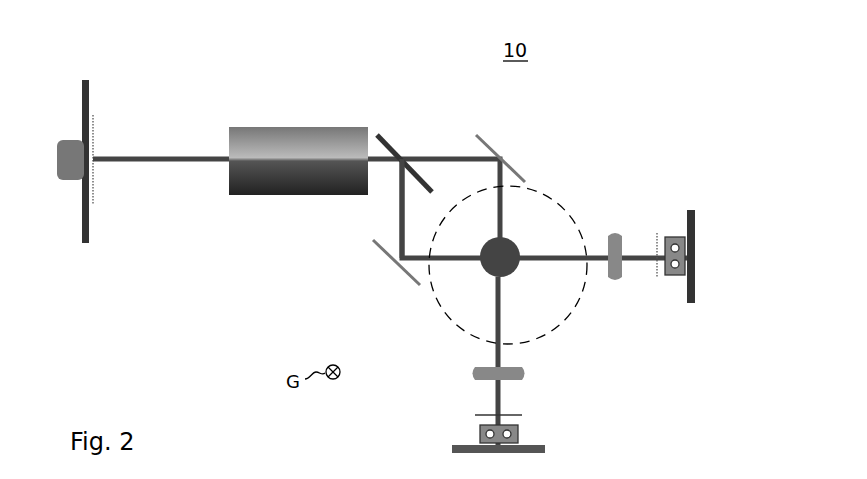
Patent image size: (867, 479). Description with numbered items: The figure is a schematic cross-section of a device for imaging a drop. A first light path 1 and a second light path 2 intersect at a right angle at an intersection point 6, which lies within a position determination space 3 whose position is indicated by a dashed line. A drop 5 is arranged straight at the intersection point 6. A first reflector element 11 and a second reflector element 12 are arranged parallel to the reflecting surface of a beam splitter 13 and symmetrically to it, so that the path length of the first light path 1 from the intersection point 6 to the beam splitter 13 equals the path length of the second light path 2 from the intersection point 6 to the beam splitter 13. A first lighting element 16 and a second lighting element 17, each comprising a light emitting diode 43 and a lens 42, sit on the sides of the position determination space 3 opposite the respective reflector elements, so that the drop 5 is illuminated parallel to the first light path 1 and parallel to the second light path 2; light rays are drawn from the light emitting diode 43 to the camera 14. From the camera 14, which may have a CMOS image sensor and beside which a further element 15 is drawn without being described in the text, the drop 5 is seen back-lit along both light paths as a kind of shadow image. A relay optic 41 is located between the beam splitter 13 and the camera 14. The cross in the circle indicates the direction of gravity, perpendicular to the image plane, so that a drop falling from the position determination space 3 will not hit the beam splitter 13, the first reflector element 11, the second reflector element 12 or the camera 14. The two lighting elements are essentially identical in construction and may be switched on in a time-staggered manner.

The first light path 1 is at (447, 157).
The second light path 2 is at (400, 204).
The position determination space 3 is at (577, 316).
The drop 5 is at (514, 246).
The intersection point 6 is at (478, 277).
The first reflector element 11 is at (513, 167).
The second reflector element 12 is at (399, 272).
The beam splitter 13 is at (390, 141).
The camera 14 is at (82, 203).
The light source aperture 15 is at (106, 114).
The first lighting element 16 is at (547, 355).
The second lighting element 17 is at (603, 297).
The relay optic 41 is at (276, 127).
The lens 42 is at (615, 233).
The light emitting diode 43 is at (677, 230).